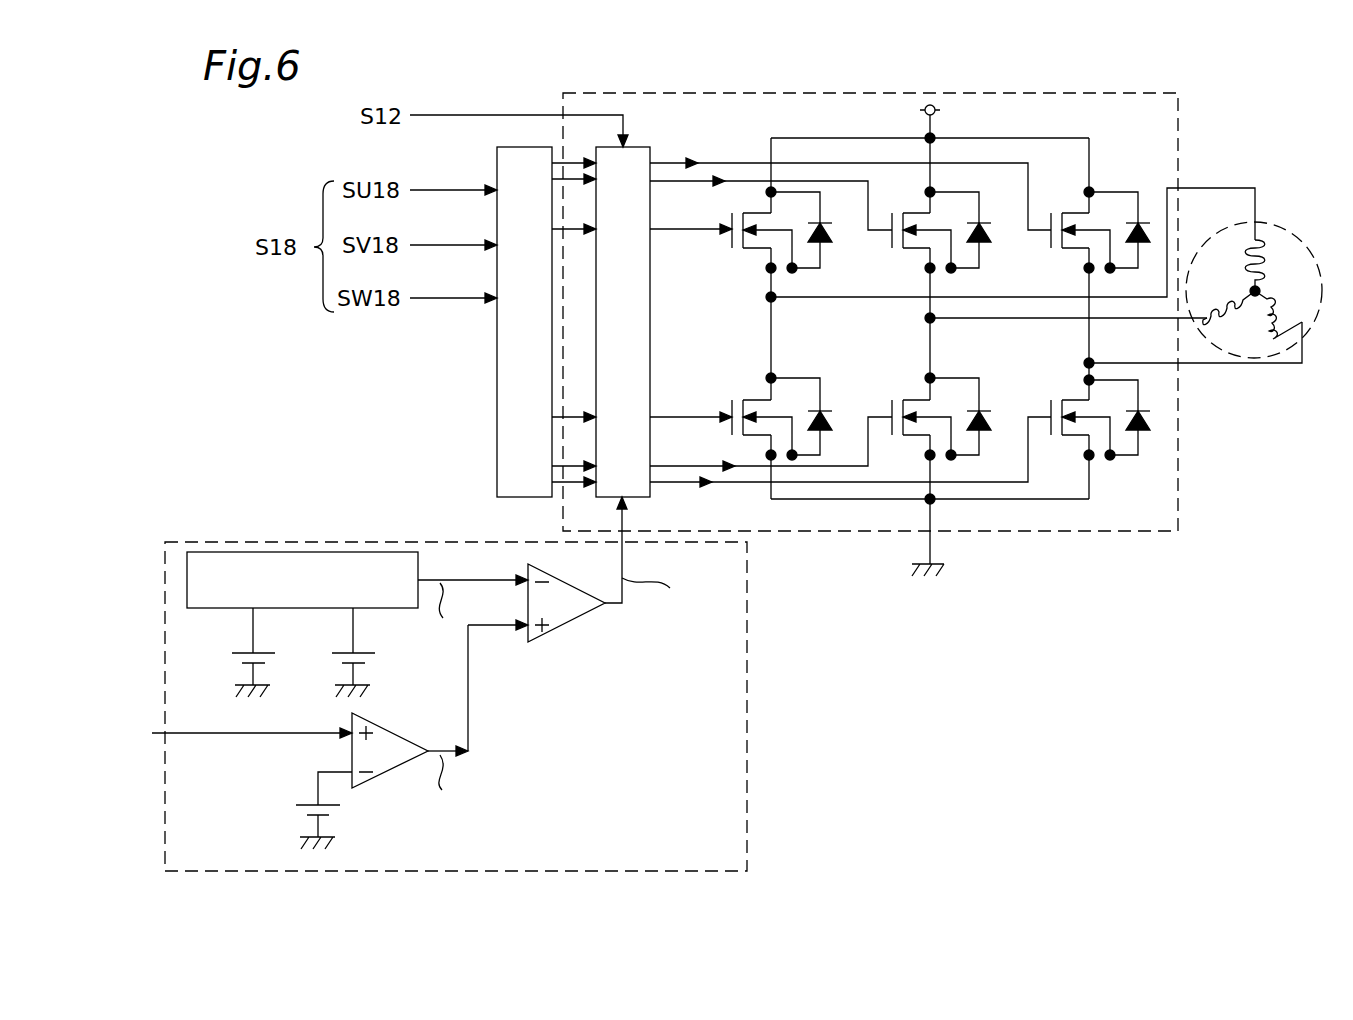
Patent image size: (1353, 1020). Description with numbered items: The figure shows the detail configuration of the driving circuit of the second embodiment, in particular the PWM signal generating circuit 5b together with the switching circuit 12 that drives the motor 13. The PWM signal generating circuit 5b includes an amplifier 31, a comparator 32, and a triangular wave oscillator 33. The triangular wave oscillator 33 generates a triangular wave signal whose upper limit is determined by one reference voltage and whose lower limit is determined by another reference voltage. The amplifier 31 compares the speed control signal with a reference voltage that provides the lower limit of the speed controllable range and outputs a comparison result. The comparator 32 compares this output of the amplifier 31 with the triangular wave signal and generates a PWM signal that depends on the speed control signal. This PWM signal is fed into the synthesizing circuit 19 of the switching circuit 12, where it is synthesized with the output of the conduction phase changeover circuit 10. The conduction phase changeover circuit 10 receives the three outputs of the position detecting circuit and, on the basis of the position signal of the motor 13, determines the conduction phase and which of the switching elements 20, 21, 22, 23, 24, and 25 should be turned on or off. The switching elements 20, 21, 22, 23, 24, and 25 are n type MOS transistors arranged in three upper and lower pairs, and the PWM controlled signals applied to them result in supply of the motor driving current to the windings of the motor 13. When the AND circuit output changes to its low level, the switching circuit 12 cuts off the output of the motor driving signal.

The conduction phase changeover circuit 10 is at (496, 421).
The synthesizing circuit 19 is at (651, 277).
The switching circuit 12 is at (1178, 490).
The motor 13 is at (1290, 240).
The switching element 20 is at (804, 252).
The switching element 21 is at (963, 252).
The switching element 22 is at (1112, 210).
The switching element 23 is at (798, 390).
The switching element 24 is at (957, 390).
The switching element 25 is at (1122, 442).
The PWM signal generating circuit 5b is at (748, 810).
The triangular wave oscillator 33 is at (283, 552).
The comparator 32 is at (572, 620).
The amplifier 31 is at (392, 770).